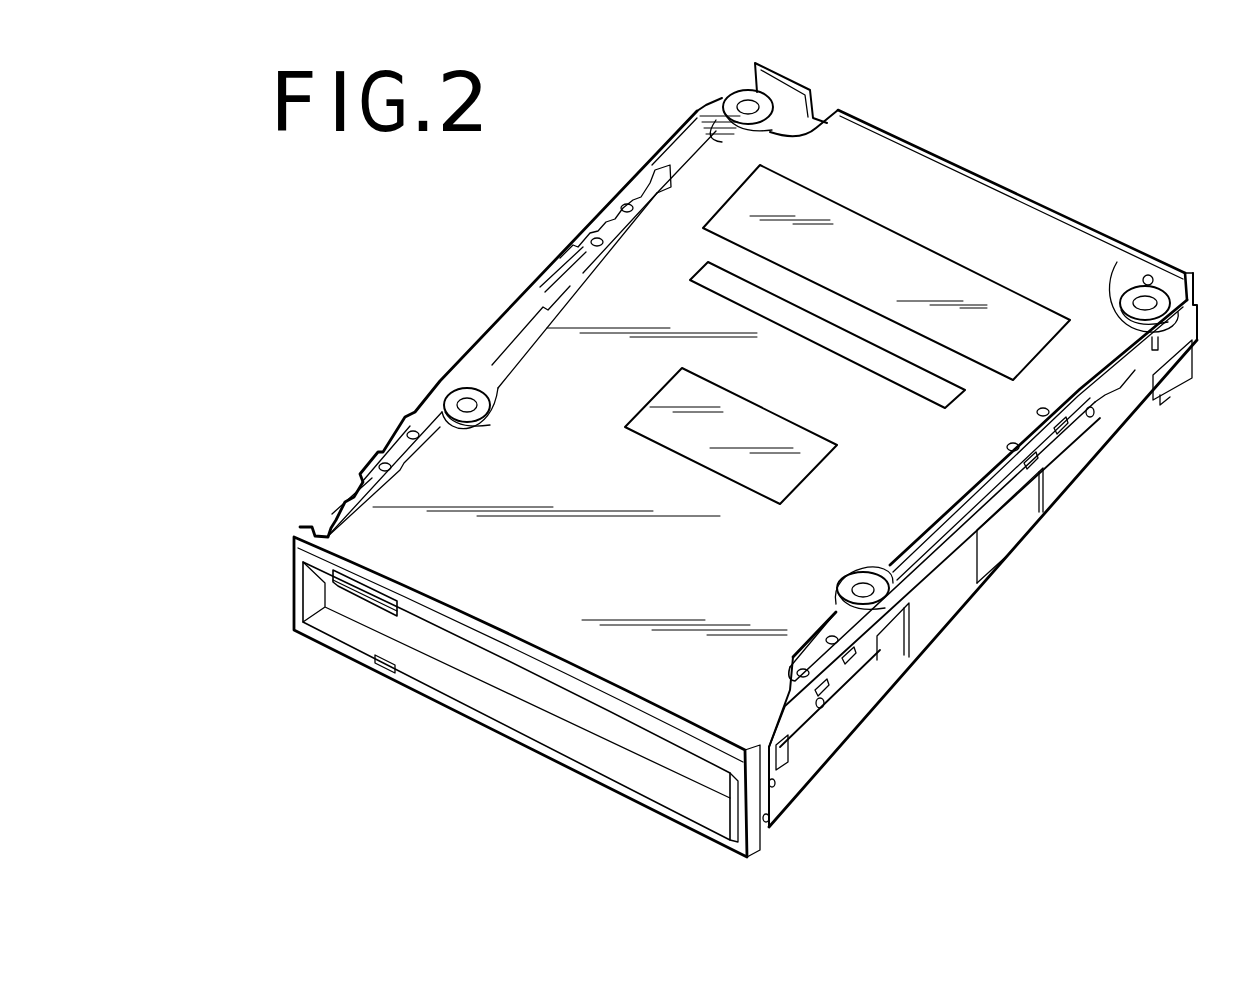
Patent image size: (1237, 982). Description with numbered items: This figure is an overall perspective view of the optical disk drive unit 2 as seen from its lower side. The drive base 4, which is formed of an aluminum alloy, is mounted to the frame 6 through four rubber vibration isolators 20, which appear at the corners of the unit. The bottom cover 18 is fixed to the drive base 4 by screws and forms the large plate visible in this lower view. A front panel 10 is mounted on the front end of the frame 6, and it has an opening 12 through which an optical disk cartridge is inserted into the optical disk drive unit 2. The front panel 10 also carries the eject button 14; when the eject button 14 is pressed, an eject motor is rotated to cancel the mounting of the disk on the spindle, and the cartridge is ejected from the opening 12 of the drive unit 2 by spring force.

The optical disk drive unit 2 is at (1022, 174).
The drive base 4 is at (968, 510).
The frame 6 is at (942, 610).
The front panel 10 is at (606, 789).
The opening 12 is at (520, 713).
The eject button 14 is at (363, 595).
The bottom cover 18 is at (901, 173).
The rubber vibration isolators 20 is at (733, 101).